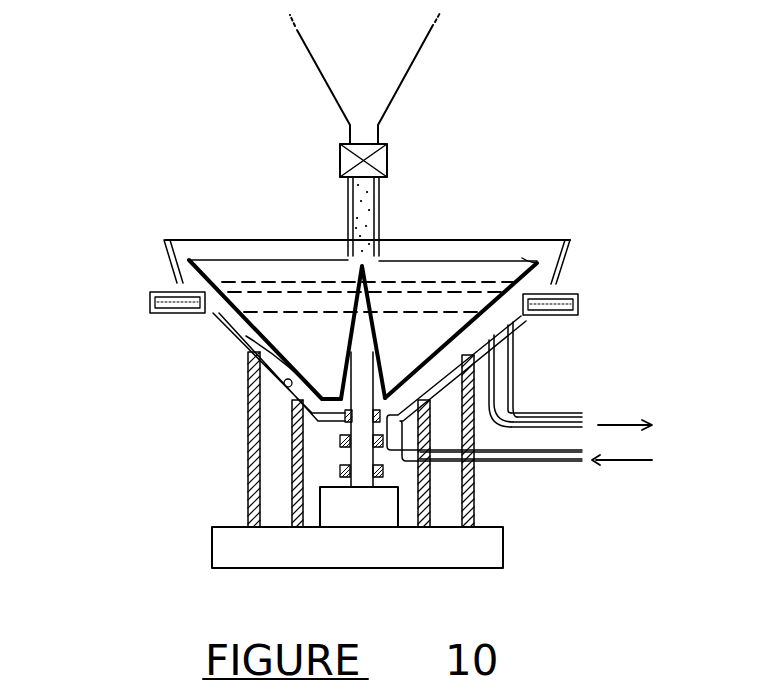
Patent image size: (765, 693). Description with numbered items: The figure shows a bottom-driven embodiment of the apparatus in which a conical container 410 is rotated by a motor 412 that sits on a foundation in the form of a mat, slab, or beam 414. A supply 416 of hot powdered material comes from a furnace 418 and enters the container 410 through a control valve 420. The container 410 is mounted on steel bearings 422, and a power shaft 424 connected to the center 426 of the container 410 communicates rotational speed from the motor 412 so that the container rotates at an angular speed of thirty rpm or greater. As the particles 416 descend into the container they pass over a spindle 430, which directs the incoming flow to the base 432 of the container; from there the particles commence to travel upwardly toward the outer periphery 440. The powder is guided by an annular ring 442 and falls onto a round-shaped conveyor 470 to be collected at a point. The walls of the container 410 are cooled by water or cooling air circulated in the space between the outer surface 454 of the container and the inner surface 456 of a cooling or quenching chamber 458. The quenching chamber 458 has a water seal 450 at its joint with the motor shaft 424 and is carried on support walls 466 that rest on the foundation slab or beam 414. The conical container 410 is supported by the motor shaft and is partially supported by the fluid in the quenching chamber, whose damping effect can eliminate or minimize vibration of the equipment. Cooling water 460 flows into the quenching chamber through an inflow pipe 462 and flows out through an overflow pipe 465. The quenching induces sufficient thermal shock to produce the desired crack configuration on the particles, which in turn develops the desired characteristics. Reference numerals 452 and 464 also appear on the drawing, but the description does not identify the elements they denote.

The conical container 410 is at (503, 352).
The motor 412 is at (360, 513).
The foundation mat, slab, or beam 414 is at (494, 540).
The supply of hot powdered material 416 is at (362, 360).
The furnace 418 is at (334, 34).
The control valve 420 is at (382, 157).
The steel bearings 422 is at (340, 470).
The power shaft 424 is at (280, 292).
The center of container 426 is at (378, 300).
The spindle 430 is at (318, 385).
The base of the container 432 is at (245, 336).
The outer periphery 440 is at (527, 262).
The annular ring 442 is at (563, 243).
The water seal 450 is at (425, 467).
The outer housing 452 is at (232, 318).
The outer surface of the container 454 is at (505, 313).
The inner surface of cooling chamber 456 is at (284, 386).
The cooling (quenching) chamber 458 is at (245, 347).
The cooling water 460 is at (650, 459).
The inflow pipe 462 is at (553, 467).
The housing lower wall 464 is at (250, 372).
The overflow pipe 465 is at (552, 413).
The support walls 466 is at (292, 501).
The round-shaped conveyor 470 is at (562, 300).